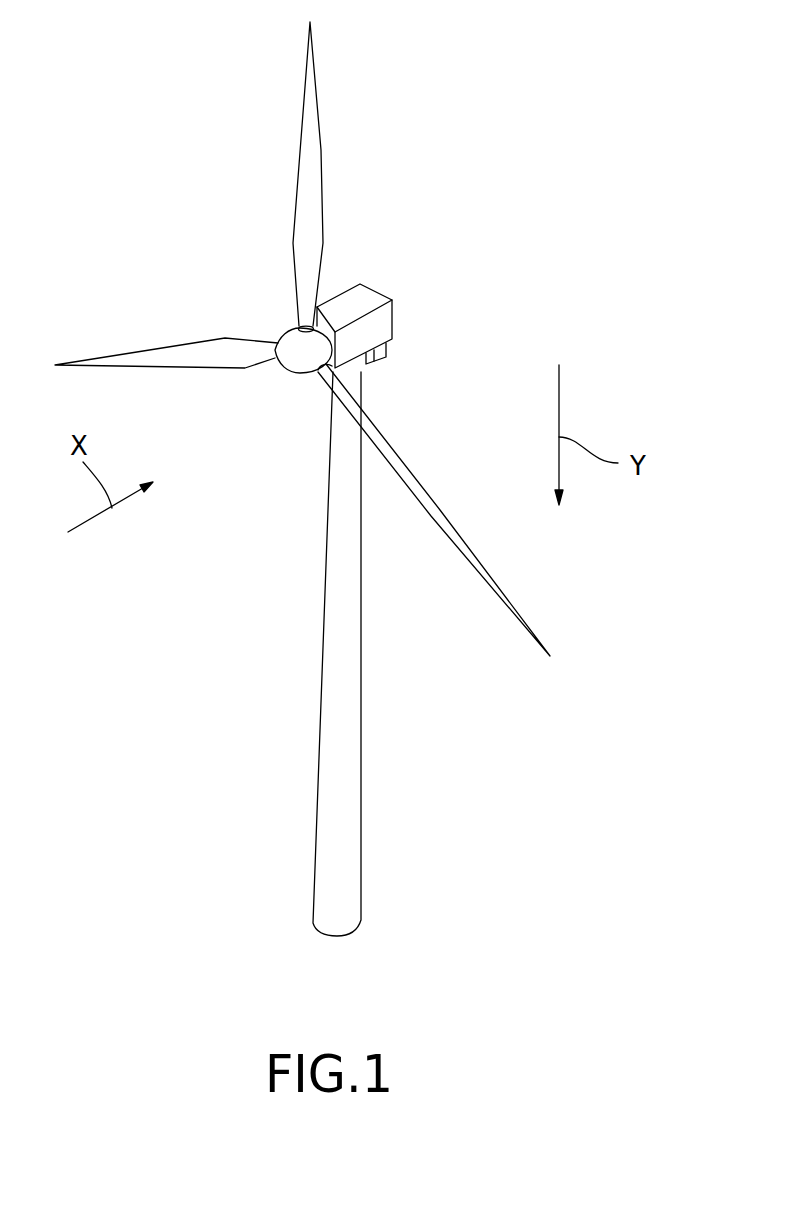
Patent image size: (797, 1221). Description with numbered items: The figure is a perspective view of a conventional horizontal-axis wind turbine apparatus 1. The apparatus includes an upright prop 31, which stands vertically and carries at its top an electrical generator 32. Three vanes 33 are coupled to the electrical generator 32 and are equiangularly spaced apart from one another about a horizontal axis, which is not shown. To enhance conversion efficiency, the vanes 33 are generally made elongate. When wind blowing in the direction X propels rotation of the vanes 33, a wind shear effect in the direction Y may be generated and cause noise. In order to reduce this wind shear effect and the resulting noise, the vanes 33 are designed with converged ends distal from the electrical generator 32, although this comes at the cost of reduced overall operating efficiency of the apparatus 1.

The wind turbine 1 is at (442, 104).
The upright prop 31 is at (322, 658).
The electrical generator 32 is at (388, 361).
The vanes 33 is at (303, 173).